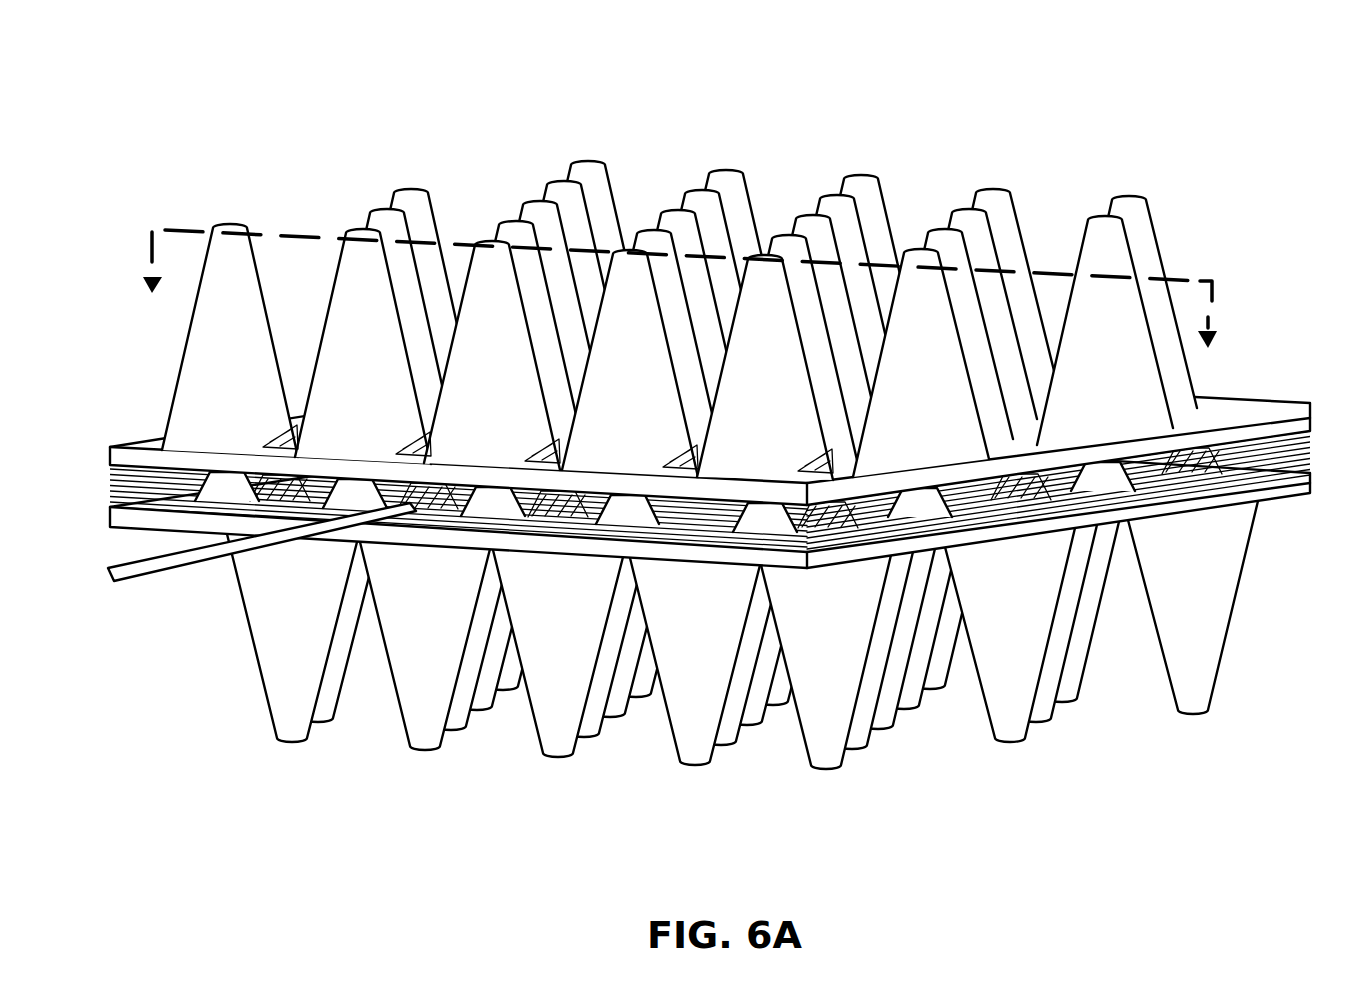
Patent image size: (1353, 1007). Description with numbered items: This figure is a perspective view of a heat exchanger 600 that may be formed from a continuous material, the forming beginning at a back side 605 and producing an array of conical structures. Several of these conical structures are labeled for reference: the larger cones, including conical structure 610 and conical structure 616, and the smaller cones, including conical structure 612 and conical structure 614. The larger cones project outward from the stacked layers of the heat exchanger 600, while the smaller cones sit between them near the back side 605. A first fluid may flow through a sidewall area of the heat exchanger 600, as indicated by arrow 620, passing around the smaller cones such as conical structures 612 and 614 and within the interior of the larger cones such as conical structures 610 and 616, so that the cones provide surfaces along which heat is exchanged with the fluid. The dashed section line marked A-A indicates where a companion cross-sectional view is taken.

The heat exchanger 600 is at (1243, 63).
The back side 605 is at (1305, 441).
The conical structure 610 is at (1132, 201).
The conical structure 612 is at (1160, 462).
The conical structure 614 is at (1108, 489).
The conical structure 616 is at (1233, 608).
The arrow 620 is at (141, 580).